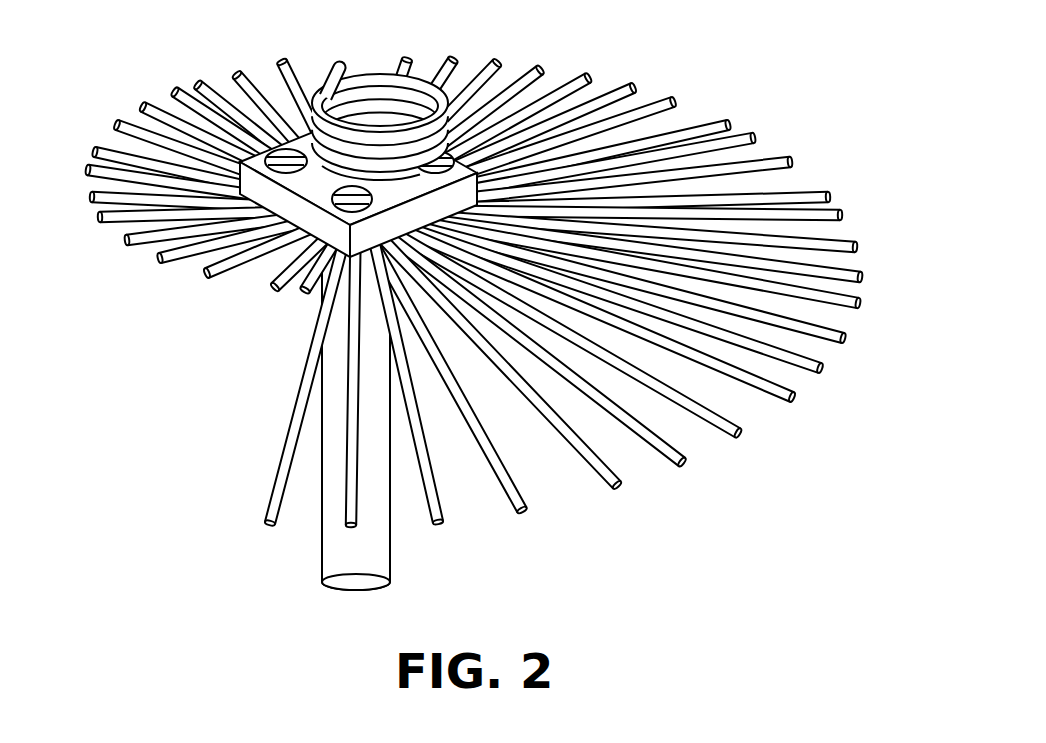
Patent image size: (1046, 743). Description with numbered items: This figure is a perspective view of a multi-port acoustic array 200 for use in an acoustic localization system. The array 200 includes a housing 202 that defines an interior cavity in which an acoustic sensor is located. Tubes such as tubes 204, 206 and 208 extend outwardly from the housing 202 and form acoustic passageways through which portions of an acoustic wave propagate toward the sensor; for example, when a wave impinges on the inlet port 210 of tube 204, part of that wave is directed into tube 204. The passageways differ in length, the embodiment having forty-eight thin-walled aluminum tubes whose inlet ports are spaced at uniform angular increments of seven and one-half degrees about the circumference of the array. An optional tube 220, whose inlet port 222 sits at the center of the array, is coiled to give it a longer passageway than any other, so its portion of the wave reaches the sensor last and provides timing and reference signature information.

The array 200 is at (474, 300).
The housing 202 is at (315, 186).
The tube 204 is at (281, 470).
The tube 206 is at (352, 498).
The tube 208 is at (440, 498).
The inlet port 210 is at (273, 522).
The tube 220 is at (332, 95).
The inlet port 222 is at (344, 64).